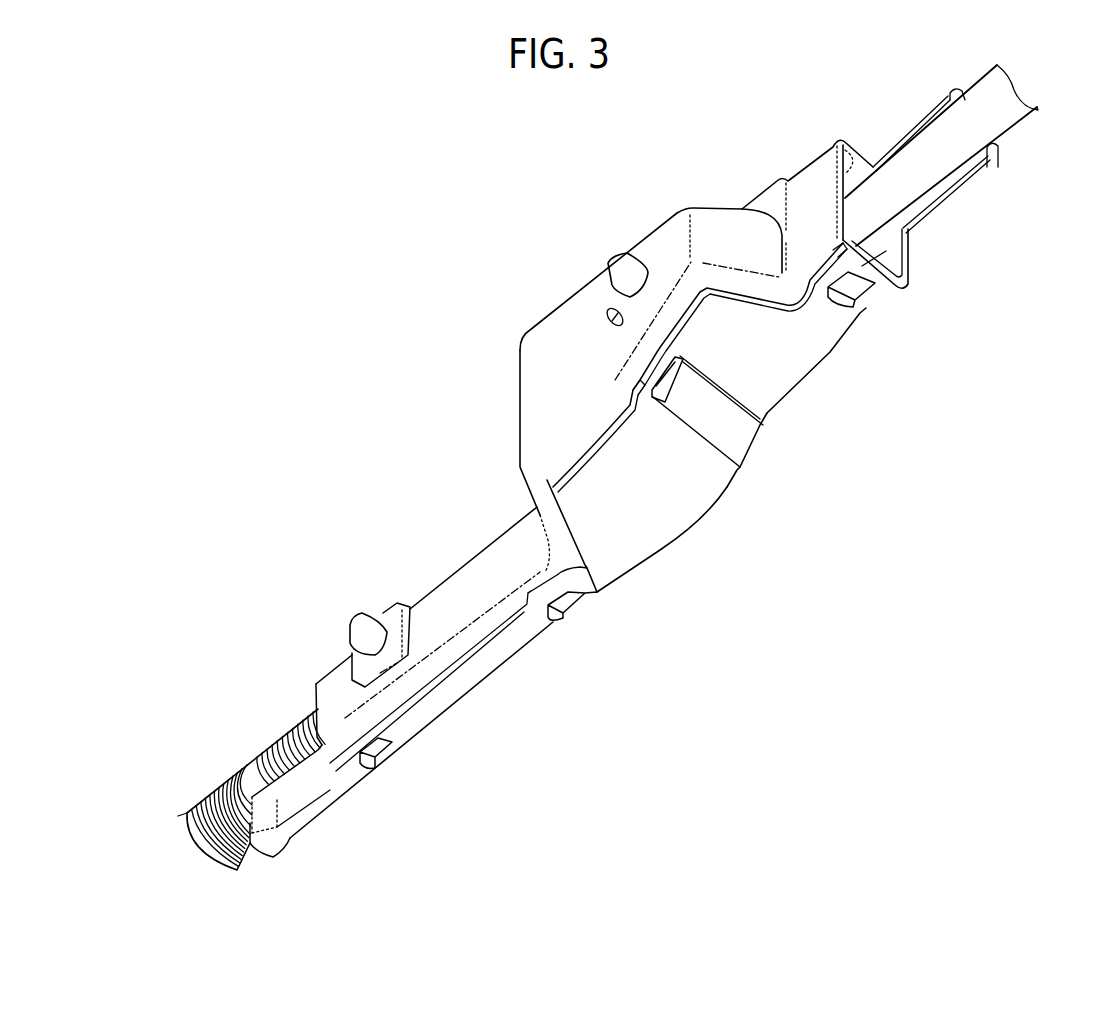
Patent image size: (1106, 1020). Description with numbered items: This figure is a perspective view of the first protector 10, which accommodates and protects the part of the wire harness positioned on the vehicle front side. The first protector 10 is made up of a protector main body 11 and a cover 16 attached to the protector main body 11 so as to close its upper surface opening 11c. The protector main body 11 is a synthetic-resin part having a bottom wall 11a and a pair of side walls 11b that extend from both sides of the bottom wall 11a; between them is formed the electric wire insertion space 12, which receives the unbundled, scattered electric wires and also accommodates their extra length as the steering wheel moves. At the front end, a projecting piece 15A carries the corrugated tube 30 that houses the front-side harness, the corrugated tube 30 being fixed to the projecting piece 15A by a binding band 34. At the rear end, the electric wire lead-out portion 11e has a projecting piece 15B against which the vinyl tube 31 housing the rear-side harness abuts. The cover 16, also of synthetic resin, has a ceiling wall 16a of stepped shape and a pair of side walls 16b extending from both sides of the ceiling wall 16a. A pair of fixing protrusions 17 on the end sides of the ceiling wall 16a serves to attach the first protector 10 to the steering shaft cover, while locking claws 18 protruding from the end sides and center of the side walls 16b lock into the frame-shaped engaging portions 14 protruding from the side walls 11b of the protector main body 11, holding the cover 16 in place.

The first protector 10 is at (840, 492).
The protector main body 11 is at (685, 531).
The bottom wall 11a is at (795, 379).
The side walls 11b is at (640, 525).
The upper surface opening 11c is at (838, 168).
The electric wire lead-out portion 11e is at (897, 267).
The electric wire insertion space 12 is at (885, 251).
The frame-shaped engaging portions 14 is at (830, 248).
The projecting piece 15A is at (305, 818).
The projecting piece 15B is at (947, 202).
The cover 16 is at (557, 310).
The ceiling wall 16a is at (533, 408).
The side walls 16b is at (467, 643).
The fixing protrusions 17 is at (618, 252).
The locking claws 18 is at (670, 382).
The corrugated tube 30 is at (205, 797).
The vinyl tube 31 is at (1004, 120).
The binding band 34 is at (245, 763).